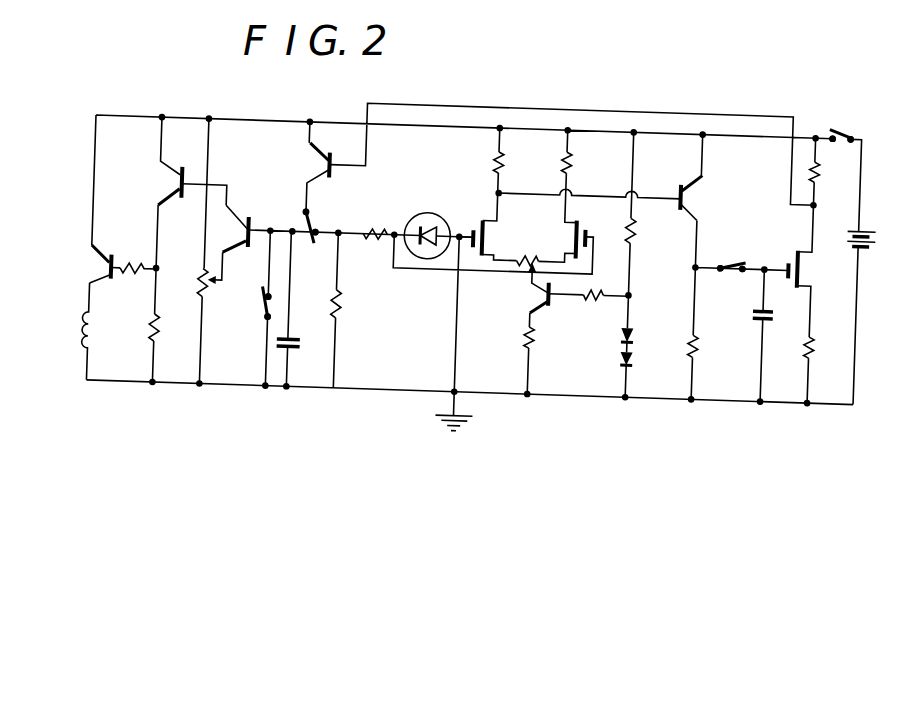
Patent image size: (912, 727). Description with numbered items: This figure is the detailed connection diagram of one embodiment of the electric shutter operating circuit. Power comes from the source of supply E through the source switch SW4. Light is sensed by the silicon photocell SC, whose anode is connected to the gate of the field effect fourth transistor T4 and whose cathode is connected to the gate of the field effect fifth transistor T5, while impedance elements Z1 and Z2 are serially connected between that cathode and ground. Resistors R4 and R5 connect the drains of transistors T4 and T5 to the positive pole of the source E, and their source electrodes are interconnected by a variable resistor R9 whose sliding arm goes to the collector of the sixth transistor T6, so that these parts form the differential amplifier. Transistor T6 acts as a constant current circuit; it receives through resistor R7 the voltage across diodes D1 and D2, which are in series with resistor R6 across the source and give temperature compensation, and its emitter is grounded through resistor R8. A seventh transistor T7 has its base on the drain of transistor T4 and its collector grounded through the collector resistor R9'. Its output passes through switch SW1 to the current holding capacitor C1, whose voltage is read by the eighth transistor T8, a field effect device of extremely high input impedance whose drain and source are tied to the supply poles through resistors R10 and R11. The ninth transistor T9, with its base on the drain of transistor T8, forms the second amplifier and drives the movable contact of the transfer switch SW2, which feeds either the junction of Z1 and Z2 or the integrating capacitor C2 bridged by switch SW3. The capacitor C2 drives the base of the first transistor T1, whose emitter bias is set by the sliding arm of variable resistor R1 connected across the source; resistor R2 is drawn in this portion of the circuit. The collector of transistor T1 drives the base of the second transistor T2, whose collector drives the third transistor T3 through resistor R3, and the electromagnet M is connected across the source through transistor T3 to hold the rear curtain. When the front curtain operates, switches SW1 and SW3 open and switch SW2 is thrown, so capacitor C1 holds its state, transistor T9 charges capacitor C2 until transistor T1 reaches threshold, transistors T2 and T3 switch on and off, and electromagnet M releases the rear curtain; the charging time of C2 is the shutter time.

The electromagnet M is at (87, 326).
The first transistor T1 is at (250, 210).
The second transistor T2 is at (183, 197).
The third transistor T3 is at (112, 236).
The field effect type fourth transistor T4 is at (496, 224).
The field effect type fifth transistor T5 is at (576, 225).
The sixth transistor T6 is at (549, 294).
The seventh transistor T7 is at (693, 187).
The eighth transistor T8 is at (809, 249).
The ninth transistor T9 is at (330, 157).
The variable resistor R1 is at (202, 274).
The resistor R2 is at (158, 322).
The resistor R3 is at (139, 279).
The resistor R4 is at (504, 150).
The resistor R5 is at (573, 148).
The resistor R6 is at (639, 219).
The resistor R7 is at (598, 284).
The resistor R8 is at (527, 324).
The variable resistor R9 is at (533, 263).
The collector resistor R9' is at (710, 351).
The resistor R10 is at (820, 149).
The resistor R11 is at (820, 322).
The current holding capacitor C1 is at (783, 297).
The integrating capacitor C2 is at (306, 314).
The diode D1 is at (642, 318).
The diode D2 is at (643, 350).
The impedance element Z1 is at (370, 216).
The impedance element Z2 is at (347, 292).
The silicon photocell SC is at (434, 202).
The switch SW1 is at (740, 250).
The transfer switch SW2 is at (326, 203).
The switch SW3 is at (256, 292).
The source switch SW4 is at (826, 91).
The source of supply E is at (868, 238).